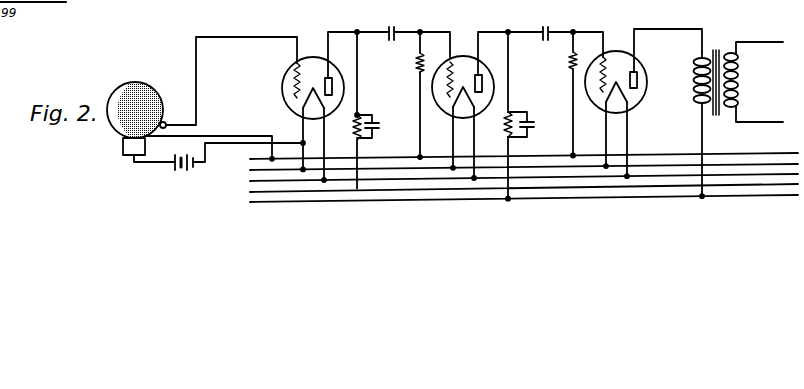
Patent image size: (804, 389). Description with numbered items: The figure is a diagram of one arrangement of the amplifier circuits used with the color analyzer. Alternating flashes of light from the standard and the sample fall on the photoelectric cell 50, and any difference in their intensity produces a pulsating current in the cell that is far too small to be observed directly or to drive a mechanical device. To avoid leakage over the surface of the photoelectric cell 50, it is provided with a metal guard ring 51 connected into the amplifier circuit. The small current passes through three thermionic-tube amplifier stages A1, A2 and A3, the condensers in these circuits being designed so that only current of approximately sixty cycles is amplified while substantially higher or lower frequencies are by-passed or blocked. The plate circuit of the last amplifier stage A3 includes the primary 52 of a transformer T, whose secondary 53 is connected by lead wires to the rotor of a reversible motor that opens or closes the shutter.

The photoelectric cell 50 is at (143, 86).
The guard ring 51 is at (121, 138).
The primary of transformer 52 is at (699, 72).
The secondary of transformer 53 is at (738, 78).
The first amplifier stage A1 is at (335, 101).
The second amplifier stage A2 is at (487, 100).
The third amplifier stage A3 is at (643, 98).
The transformer T is at (715, 118).